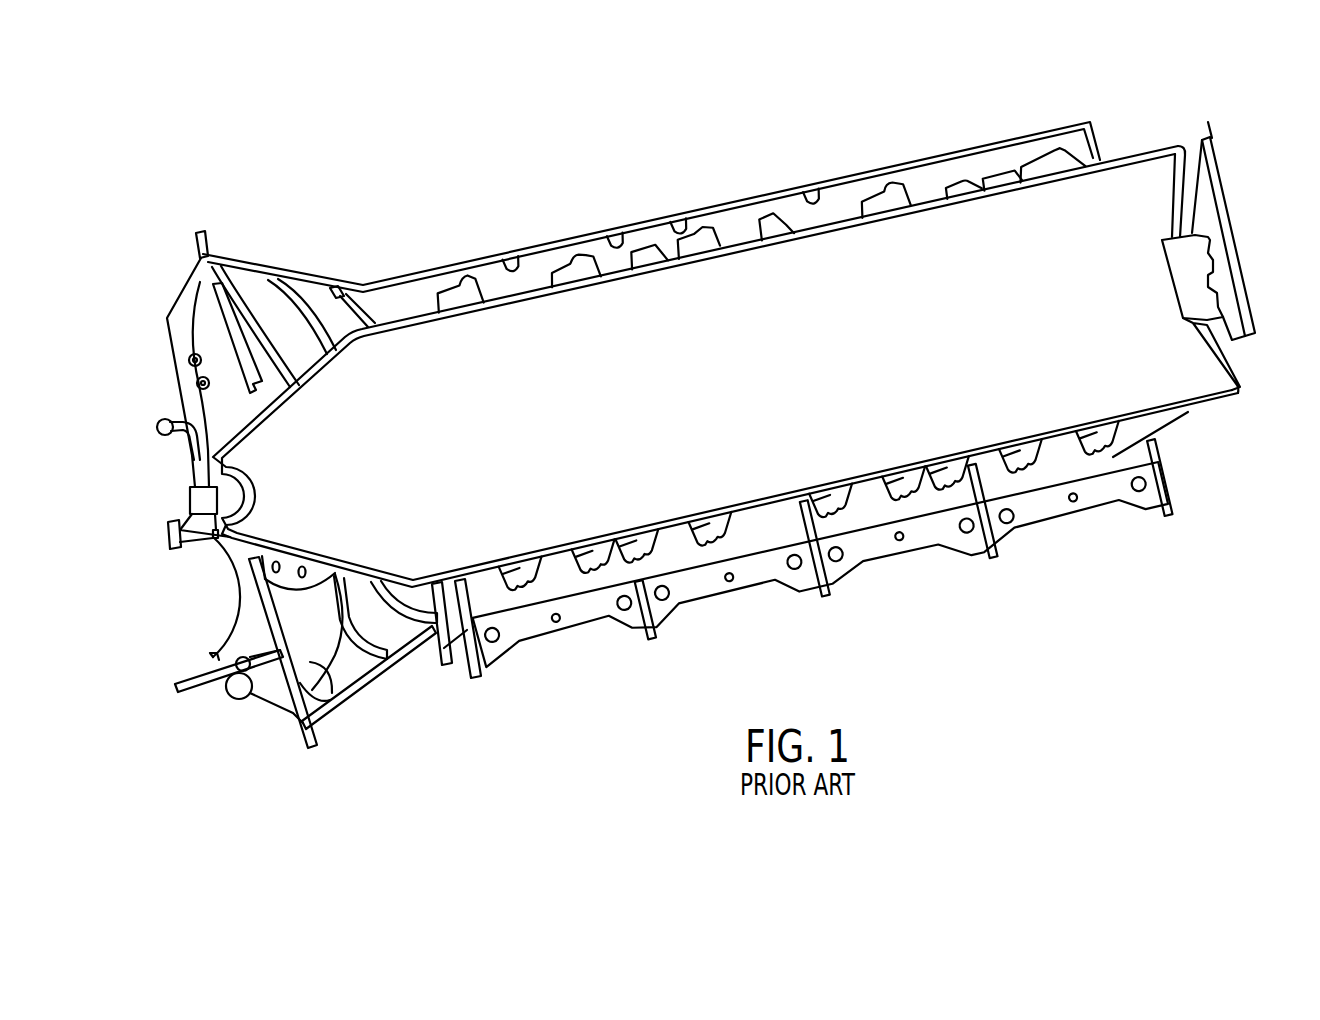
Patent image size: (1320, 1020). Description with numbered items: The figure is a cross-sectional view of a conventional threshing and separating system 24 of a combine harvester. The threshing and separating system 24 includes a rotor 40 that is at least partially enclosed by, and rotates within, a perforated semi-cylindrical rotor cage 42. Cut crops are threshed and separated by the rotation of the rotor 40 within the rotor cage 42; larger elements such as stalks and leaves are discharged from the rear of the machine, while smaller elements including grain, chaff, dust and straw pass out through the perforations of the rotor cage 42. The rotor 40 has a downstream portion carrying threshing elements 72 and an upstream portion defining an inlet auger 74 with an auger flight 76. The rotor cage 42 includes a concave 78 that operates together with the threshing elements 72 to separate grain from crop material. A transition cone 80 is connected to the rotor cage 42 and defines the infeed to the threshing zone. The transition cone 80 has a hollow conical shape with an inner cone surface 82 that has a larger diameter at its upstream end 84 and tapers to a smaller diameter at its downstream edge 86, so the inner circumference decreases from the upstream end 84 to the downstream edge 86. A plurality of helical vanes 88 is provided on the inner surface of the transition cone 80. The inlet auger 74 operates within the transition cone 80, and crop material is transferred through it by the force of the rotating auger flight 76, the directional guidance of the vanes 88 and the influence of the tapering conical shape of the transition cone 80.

The threshing and separating system 24 is at (541, 146).
The rotor 40 is at (933, 243).
The rotor cage 42 is at (1102, 122).
The threshing elements 72 is at (753, 213).
The inlet auger 74 is at (247, 602).
The auger flight 76 is at (312, 660).
The concave 78 is at (858, 175).
The transition cone 80 is at (242, 257).
The inner cone surface 82 is at (257, 300).
The upstream end 84 is at (300, 730).
The downstream edge 86 is at (371, 283).
The helical vanes 88 is at (343, 293).